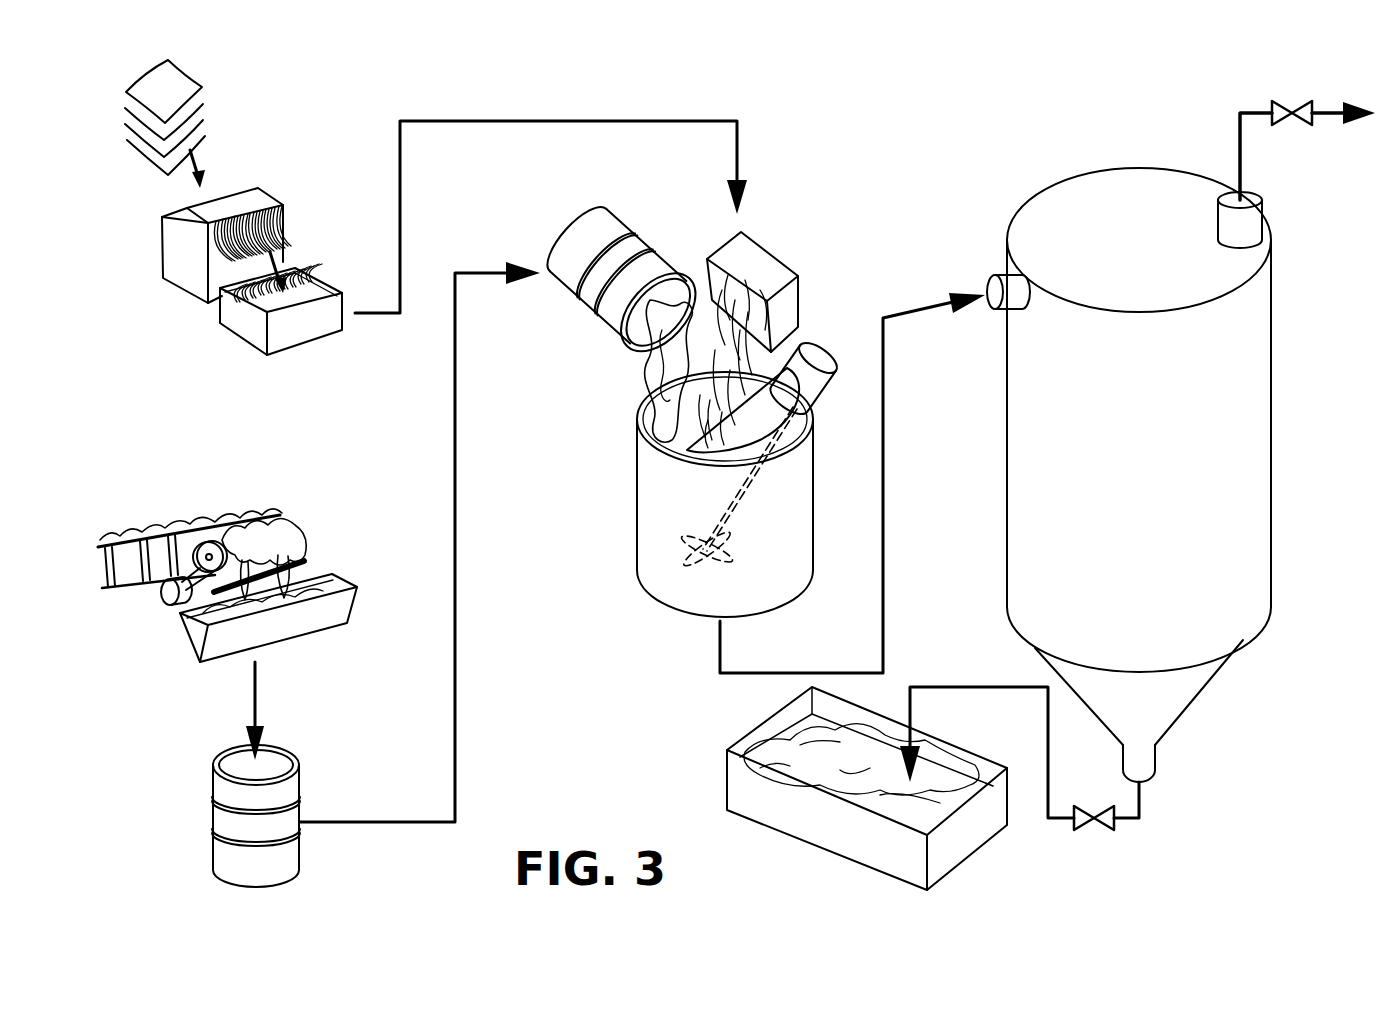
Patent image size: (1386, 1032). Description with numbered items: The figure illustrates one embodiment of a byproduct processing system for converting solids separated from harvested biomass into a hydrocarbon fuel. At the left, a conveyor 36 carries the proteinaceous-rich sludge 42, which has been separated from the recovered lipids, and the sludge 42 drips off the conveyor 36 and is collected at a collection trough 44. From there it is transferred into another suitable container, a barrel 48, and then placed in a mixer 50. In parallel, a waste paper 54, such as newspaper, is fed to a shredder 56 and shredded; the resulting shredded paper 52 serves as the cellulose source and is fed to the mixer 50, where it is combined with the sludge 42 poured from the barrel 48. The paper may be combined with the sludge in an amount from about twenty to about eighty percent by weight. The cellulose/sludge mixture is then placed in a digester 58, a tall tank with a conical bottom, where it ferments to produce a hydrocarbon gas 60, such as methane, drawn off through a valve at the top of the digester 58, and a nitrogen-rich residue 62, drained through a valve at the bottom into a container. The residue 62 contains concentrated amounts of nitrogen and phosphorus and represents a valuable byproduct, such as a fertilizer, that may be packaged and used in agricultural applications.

The conveyor 36 is at (306, 529).
The proteinaceous-rich sludge 42 is at (226, 516).
The collection point 44 is at (217, 657).
The barrel 48 is at (213, 810).
The mixer 50 is at (635, 484).
The cellulose source 52 is at (283, 233).
The waste paper 54 is at (203, 97).
The shredder 56 is at (238, 203).
The digester 58 is at (1268, 494).
The hydrocarbon gas 60 is at (1320, 117).
The nitrogen-rich residue 62 is at (947, 843).